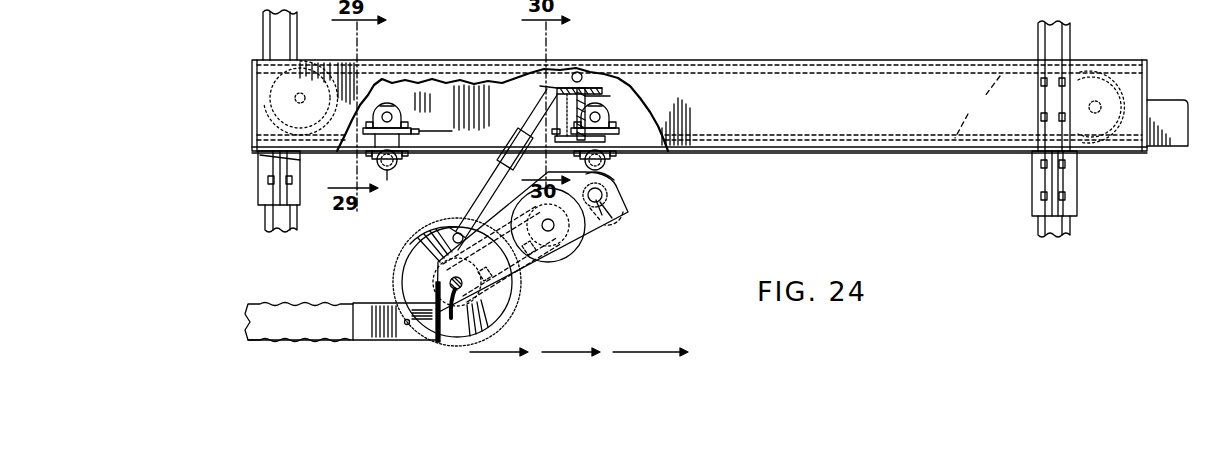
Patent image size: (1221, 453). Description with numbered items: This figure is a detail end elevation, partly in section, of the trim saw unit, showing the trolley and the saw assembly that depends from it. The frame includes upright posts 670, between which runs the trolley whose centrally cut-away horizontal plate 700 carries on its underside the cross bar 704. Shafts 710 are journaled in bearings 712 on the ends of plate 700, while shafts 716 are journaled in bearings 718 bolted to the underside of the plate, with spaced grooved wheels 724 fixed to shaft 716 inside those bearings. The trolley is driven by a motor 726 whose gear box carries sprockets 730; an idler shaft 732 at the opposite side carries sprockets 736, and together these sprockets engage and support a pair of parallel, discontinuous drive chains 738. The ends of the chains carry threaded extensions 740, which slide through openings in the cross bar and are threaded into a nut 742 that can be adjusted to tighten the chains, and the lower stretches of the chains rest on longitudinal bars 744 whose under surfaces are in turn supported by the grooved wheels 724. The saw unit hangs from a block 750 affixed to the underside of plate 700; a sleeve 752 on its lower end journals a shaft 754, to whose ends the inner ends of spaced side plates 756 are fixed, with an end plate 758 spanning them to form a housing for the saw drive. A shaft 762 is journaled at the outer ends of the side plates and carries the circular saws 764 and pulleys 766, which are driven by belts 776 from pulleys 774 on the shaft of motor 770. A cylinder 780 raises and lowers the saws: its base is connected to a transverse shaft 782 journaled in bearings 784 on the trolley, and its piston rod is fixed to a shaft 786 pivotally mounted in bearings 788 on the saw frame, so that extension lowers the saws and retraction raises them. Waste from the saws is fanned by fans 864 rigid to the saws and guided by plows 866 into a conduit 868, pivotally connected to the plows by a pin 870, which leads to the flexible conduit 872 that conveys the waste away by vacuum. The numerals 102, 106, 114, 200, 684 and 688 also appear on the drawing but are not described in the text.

The cover plate 102 is at (552, 90).
The mounting bracket 106 is at (600, 96).
The bearing base plate 114 is at (392, 112).
The hydraulic cylinder 200 is at (506, 150).
The upright posts 670 is at (298, 224).
The frame beam 684 is at (766, 150).
The post bracket 688 is at (1077, 180).
The horizontal plate 700 is at (398, 107).
The cross bar 704 is at (400, 156).
The shafts 710 is at (388, 112).
The bearings 712 is at (384, 111).
The shafts 716 is at (395, 166).
The bearings 718 is at (387, 180).
The grooved wheels 724 is at (392, 170).
The motor 726 is at (1176, 146).
The sprockets 730 is at (1076, 126).
The idler shaft 732 is at (301, 98).
The sprockets 736 is at (322, 104).
The drive chains 738 is at (977, 107).
The threaded extensions 740 is at (348, 149).
The nut 742 is at (416, 129).
The longitudinal bars 744 is at (822, 152).
The block 750 is at (616, 176).
The sleeve 752 is at (618, 222).
The shaft 754 is at (618, 206).
The side plates 756 is at (528, 258).
The end plate 758 is at (448, 322).
The shaft 762 is at (456, 290).
The circular saws 764 is at (514, 314).
The pulleys 766 is at (502, 253).
The motor 770 is at (582, 252).
The pulleys 774 is at (580, 236).
The belts 776 is at (503, 272).
The cylinder 780 is at (528, 128).
The transverse shaft 782 is at (582, 74).
The bearings 784 is at (568, 85).
The shaft 786 is at (458, 232).
The bearings 788 is at (410, 244).
The fans 864 is at (412, 262).
The plows 866 is at (420, 330).
The conduit 868 is at (378, 305).
The pin 870 is at (403, 325).
The flexible conduit 872 is at (308, 325).